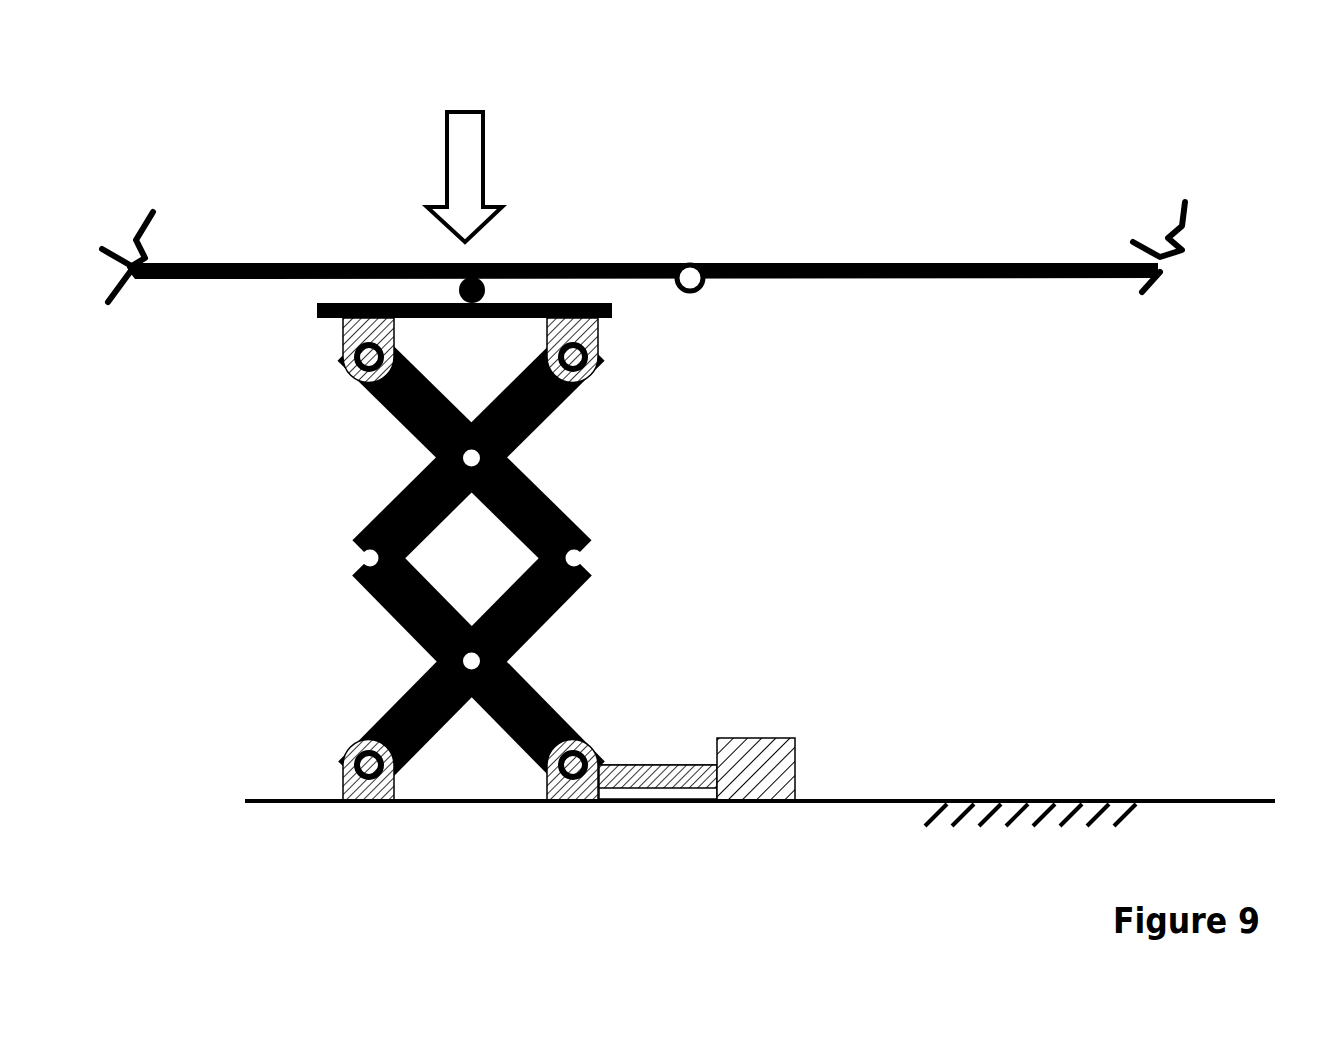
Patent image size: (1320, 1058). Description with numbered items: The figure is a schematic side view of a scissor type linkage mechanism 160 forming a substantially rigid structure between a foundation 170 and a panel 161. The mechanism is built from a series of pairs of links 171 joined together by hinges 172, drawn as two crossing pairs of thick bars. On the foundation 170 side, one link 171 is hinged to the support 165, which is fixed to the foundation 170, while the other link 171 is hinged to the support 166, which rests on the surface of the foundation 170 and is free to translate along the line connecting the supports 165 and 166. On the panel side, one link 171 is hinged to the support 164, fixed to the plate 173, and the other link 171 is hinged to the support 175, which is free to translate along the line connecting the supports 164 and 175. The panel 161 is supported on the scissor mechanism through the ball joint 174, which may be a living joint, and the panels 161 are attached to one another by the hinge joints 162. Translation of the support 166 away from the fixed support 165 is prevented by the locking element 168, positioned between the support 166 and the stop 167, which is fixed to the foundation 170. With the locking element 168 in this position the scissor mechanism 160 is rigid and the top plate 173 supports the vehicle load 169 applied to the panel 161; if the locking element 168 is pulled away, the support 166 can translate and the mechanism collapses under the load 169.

The scissor type linkage mechanism 160 is at (743, 493).
The panel 161 is at (216, 256).
The hinge joint 162 is at (703, 254).
The support 164 is at (336, 345).
The support 165 is at (333, 779).
The support 166 is at (576, 796).
The stop 167 is at (810, 749).
The locking element 168 is at (680, 750).
The vehicle load 169 is at (464, 152).
The foundation 170 is at (1211, 787).
The links 171 is at (380, 422).
The hinge 172 is at (330, 558).
The plate 173 is at (628, 306).
The ball joint 174 is at (498, 290).
The support 175 is at (612, 342).